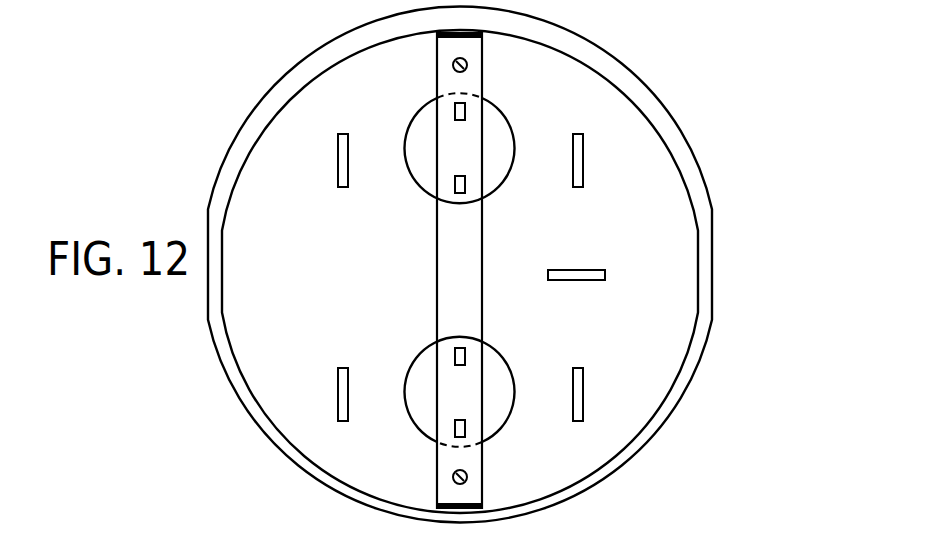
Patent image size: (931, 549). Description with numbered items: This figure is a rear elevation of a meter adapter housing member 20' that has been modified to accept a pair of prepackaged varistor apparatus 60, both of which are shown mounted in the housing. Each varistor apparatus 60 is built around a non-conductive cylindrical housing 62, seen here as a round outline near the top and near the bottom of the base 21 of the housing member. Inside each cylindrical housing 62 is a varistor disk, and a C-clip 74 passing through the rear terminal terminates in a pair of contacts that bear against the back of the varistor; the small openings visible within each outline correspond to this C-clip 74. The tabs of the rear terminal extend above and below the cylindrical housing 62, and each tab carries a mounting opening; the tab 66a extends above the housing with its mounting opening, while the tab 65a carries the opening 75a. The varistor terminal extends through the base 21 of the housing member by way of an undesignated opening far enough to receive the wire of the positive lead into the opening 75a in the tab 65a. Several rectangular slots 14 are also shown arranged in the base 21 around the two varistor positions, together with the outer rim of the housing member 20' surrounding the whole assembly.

The adapter housing member 20' is at (476, 265).
The base 21 is at (663, 248).
The slots 14 is at (338, 150).
The varistor apparatus 60 is at (413, 185).
The cylindrical housing 62 is at (495, 152).
The C-clip 74 is at (463, 176).
The tab 65a is at (443, 73).
The tab 66a is at (467, 477).
The mounting opening 75a is at (467, 71).